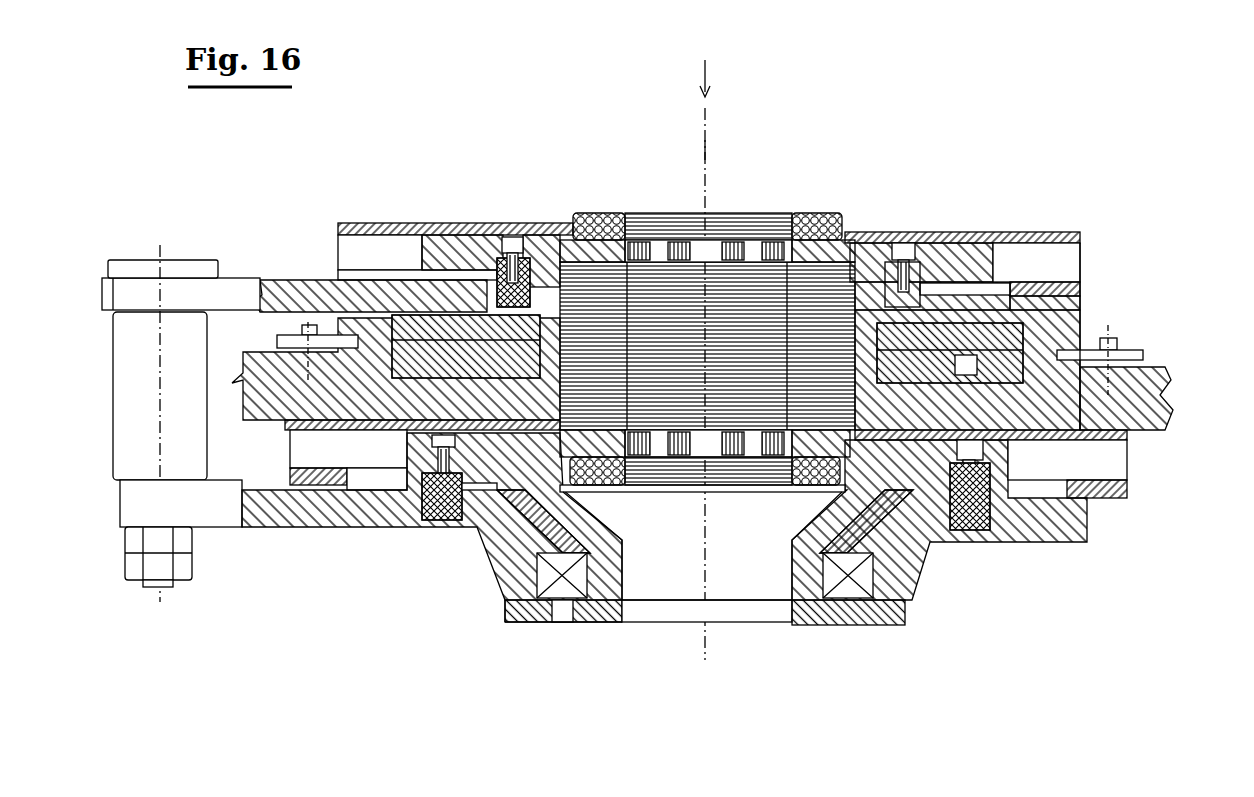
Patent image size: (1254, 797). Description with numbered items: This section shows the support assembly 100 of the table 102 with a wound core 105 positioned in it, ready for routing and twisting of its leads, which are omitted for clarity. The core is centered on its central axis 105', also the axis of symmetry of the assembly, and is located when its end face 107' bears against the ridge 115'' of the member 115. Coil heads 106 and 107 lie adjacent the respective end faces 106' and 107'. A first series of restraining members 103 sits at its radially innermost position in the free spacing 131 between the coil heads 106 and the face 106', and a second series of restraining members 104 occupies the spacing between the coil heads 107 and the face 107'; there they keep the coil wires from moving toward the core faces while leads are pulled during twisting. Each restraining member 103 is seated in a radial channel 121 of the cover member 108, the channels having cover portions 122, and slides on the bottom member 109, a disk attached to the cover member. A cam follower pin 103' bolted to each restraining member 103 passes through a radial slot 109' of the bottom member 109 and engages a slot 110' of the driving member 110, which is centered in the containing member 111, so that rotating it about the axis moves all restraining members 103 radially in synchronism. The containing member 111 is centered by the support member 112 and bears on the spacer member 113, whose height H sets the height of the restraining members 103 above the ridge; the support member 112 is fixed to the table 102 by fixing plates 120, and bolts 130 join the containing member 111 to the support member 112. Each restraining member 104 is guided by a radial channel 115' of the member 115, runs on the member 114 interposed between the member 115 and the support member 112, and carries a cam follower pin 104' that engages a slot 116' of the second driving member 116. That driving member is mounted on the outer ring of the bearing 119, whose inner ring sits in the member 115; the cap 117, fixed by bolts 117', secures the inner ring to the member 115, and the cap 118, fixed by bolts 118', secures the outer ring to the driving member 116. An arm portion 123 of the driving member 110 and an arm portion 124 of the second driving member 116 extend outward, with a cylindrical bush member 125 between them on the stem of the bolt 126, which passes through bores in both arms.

The support assembly 100 is at (334, 190).
The table 102 is at (1143, 430).
The restraining members of the first series 103 is at (732, 302).
The cam follower pin 103' is at (760, 231).
The restraining members of the second series 104 is at (762, 541).
The cam follower pin 104' is at (432, 516).
The wound core 105 is at (707, 284).
The central axis 105' is at (662, 125).
The coil heads 106 is at (617, 203).
The end face 106' is at (779, 207).
The coil heads 107 is at (620, 493).
The end face 107' is at (790, 486).
The cover member 108 is at (330, 247).
The bottom member 109 is at (370, 279).
The radial slot 109' is at (730, 219).
The driving member 110 is at (1096, 287).
The slots 110' is at (813, 236).
The containing member 111 is at (1050, 337).
The support member 112 is at (1133, 408).
The spacer member 113 is at (1090, 505).
The member 114 is at (287, 426).
The member 115 is at (775, 520).
The radial channel 115' is at (346, 507).
The ridge 115'' is at (461, 531).
The second driving member 116 is at (681, 549).
The slots 116' is at (417, 548).
The cap 117 is at (705, 634).
The bolts 117' is at (696, 675).
The cap 118 is at (563, 671).
The bolts 118' is at (494, 646).
The bearing 119 is at (563, 624).
The fixing plates 120 is at (280, 340).
The channel 121 is at (397, 247).
The cover portions 122 is at (505, 237).
The arm portion 123 is at (240, 280).
The arm portion 124 is at (142, 498).
The cylindrical bush member 125 is at (127, 352).
The bolt 126 is at (167, 587).
The bolts of the second series 130 is at (905, 243).
The free spacing 131 is at (800, 245).